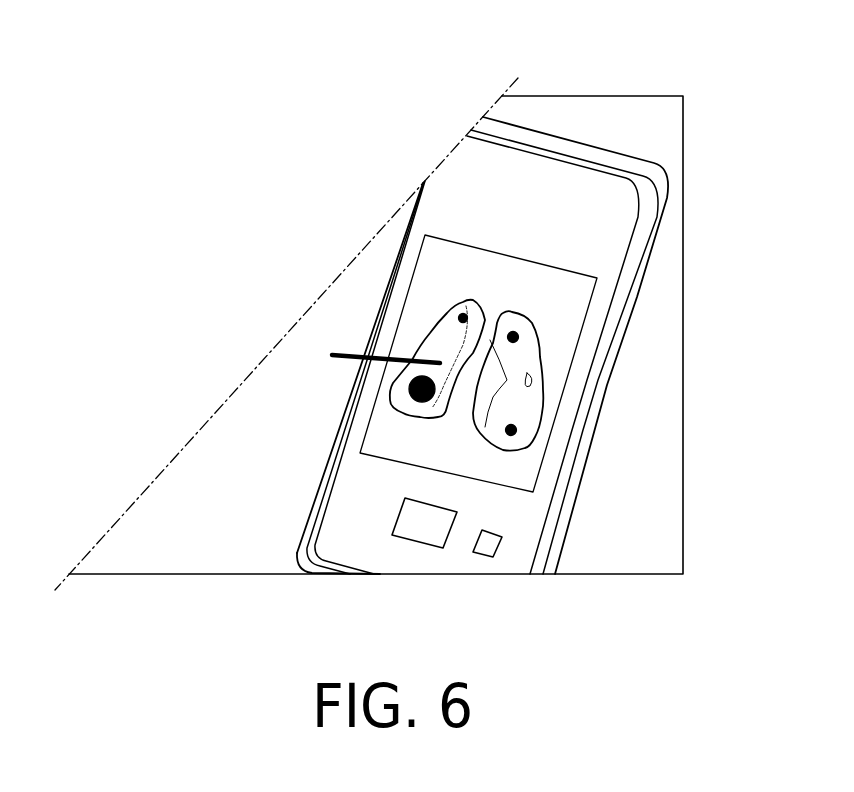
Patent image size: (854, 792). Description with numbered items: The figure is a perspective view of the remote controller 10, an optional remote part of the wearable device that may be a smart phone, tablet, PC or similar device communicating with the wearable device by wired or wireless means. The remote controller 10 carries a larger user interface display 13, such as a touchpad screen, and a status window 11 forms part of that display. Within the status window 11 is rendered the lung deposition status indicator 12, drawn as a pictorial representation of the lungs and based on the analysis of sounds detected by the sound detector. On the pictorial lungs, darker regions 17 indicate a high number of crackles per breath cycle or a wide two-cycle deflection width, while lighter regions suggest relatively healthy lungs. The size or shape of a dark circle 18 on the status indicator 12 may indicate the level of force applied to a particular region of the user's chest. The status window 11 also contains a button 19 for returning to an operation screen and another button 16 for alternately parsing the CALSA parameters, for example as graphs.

The remote controller 10 is at (492, 377).
The status window 11 is at (585, 290).
The lung deposition status indicator 12 is at (430, 337).
The user interface display 13 is at (612, 219).
The button 16 is at (487, 555).
The darker regions 17 is at (715, 405).
The dark circle 18 is at (463, 318).
The button 19 is at (419, 525).